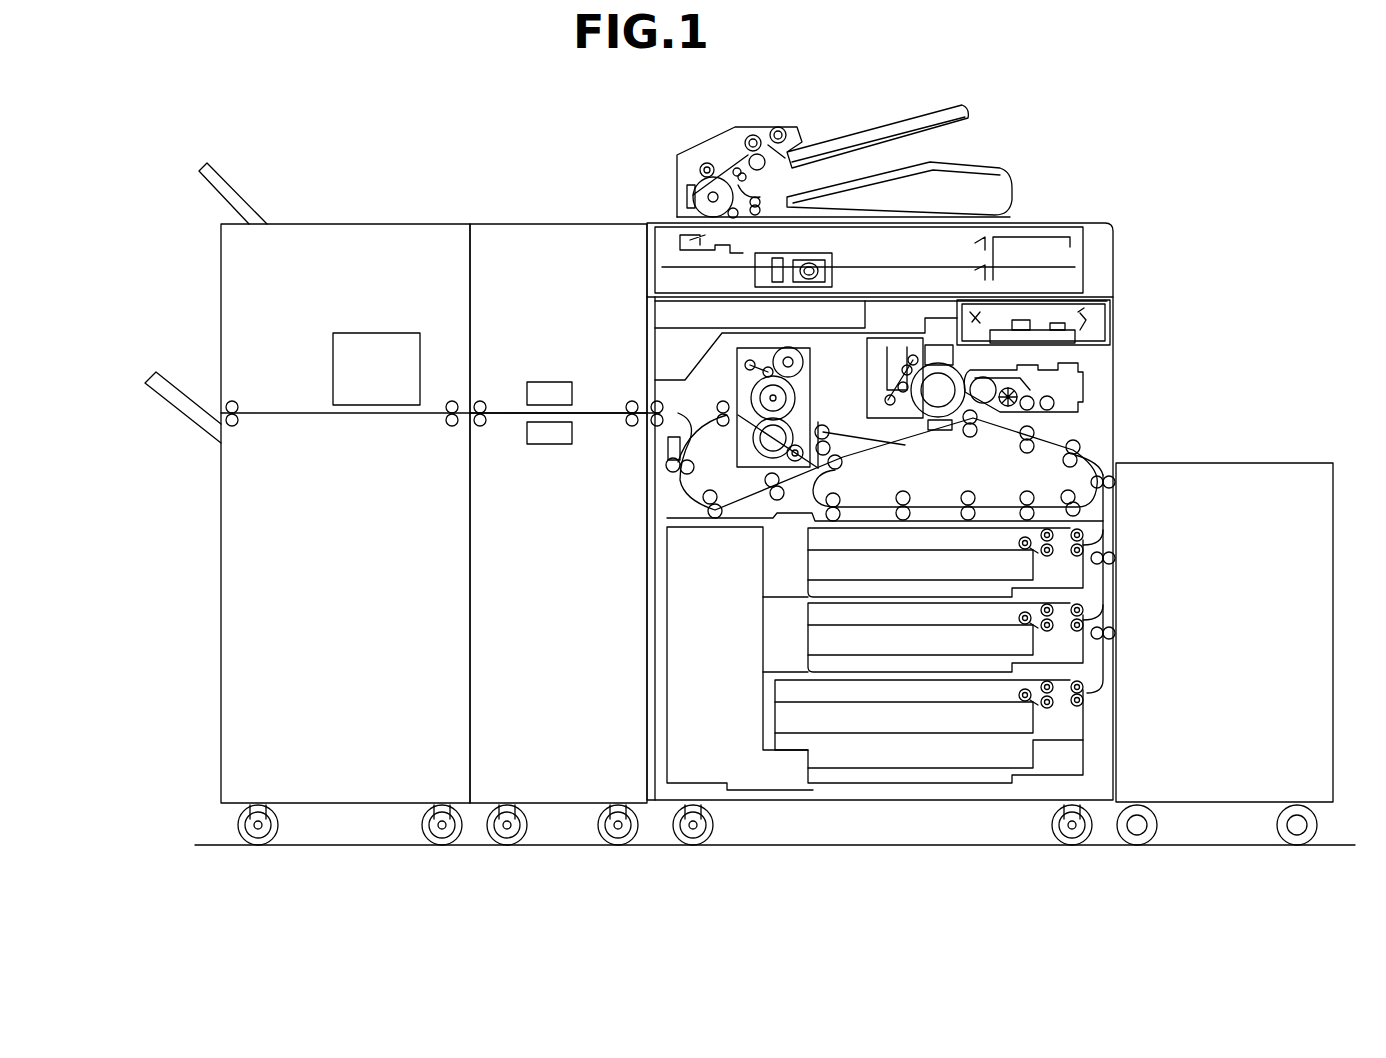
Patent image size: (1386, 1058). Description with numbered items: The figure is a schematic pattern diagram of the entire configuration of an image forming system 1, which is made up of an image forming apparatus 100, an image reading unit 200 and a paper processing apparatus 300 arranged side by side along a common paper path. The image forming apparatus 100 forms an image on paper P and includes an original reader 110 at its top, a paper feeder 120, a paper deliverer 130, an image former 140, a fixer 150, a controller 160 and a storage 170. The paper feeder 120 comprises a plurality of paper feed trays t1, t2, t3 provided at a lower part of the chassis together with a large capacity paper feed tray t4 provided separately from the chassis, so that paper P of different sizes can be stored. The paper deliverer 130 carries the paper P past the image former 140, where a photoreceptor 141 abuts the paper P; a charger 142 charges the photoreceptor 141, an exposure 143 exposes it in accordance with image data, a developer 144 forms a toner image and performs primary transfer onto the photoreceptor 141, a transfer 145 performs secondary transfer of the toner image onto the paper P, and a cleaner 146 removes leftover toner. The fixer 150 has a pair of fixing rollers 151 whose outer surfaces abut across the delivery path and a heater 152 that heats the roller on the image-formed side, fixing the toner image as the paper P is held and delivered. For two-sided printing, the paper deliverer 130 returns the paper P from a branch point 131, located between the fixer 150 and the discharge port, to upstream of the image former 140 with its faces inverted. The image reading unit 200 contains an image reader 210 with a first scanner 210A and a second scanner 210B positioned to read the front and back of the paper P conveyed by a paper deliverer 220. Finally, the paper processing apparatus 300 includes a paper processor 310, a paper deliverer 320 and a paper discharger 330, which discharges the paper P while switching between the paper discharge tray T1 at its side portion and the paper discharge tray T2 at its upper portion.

The image forming system 1 is at (1190, 73).
The image forming apparatus 100 is at (766, 87).
The original reader 110 is at (1092, 222).
The paper feeder 120 is at (1048, 607).
The paper deliverer 130 is at (1108, 456).
The branch point 131 is at (702, 425).
The image former 140 is at (1098, 404).
The photoreceptor 141 is at (967, 355).
The charger 142 is at (938, 345).
The exposure 143 is at (1113, 305).
The developer 144 is at (1085, 382).
The transfer 145 is at (942, 437).
The cleaner 146 is at (883, 357).
The fixer 150 is at (727, 353).
The fixing rollers 151 is at (790, 437).
The heater 152 is at (755, 397).
The controller 160 is at (737, 770).
The storage 170 is at (651, 310).
The image reading unit 200 is at (537, 211).
The image reader 210 is at (571, 425).
The first scanner 210A is at (549, 381).
The second scanner 210B is at (548, 448).
The paper deliverer 220 is at (608, 415).
The paper processing apparatus 300 is at (379, 211).
The paper processor 310 is at (388, 343).
The paper deliverer 320 is at (290, 415).
The paper discharger 330 is at (217, 302).
The paper discharge tray T1 is at (163, 398).
The paper discharge tray T2 is at (233, 185).
The paper feed tray t1 is at (1033, 567).
The paper feed tray t2 is at (1033, 643).
The paper feed tray t3 is at (1037, 755).
The large capacity paper feed tray t4 is at (1256, 459).
The paper P is at (963, 758).